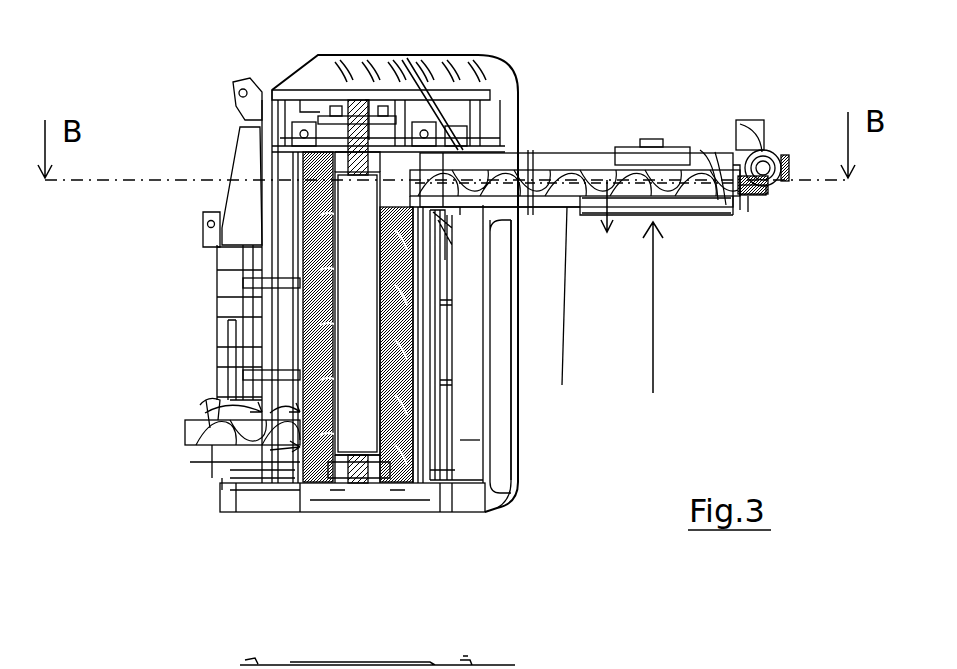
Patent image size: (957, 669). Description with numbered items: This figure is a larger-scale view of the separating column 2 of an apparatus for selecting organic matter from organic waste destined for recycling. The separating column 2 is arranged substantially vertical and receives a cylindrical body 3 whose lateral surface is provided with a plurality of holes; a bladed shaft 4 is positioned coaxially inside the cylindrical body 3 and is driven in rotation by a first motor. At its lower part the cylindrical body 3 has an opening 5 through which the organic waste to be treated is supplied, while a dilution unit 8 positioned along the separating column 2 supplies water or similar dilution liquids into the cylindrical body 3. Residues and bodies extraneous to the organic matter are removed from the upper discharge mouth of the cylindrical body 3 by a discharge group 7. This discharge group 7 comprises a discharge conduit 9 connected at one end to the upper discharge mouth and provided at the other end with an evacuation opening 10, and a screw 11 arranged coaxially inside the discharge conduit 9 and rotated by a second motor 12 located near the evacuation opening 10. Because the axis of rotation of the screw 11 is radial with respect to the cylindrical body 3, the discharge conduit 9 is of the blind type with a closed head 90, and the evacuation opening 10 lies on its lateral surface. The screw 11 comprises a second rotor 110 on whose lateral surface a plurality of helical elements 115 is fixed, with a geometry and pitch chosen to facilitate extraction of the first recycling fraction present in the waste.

The separating column 2 is at (484, 440).
The cylindrical body 3 is at (413, 318).
The bladed shaft 4 is at (355, 360).
The opening 5 is at (300, 448).
The discharge group 7 is at (594, 47).
The dilution unit 8 is at (300, 288).
The discharge conduit 9 is at (575, 160).
The evacuation opening 10 is at (664, 332).
The screw 11 is at (697, 208).
The second motor 12 is at (769, 108).
The closed head 90 is at (756, 230).
The second rotor 110 is at (620, 215).
The helical elements 115 is at (514, 343).